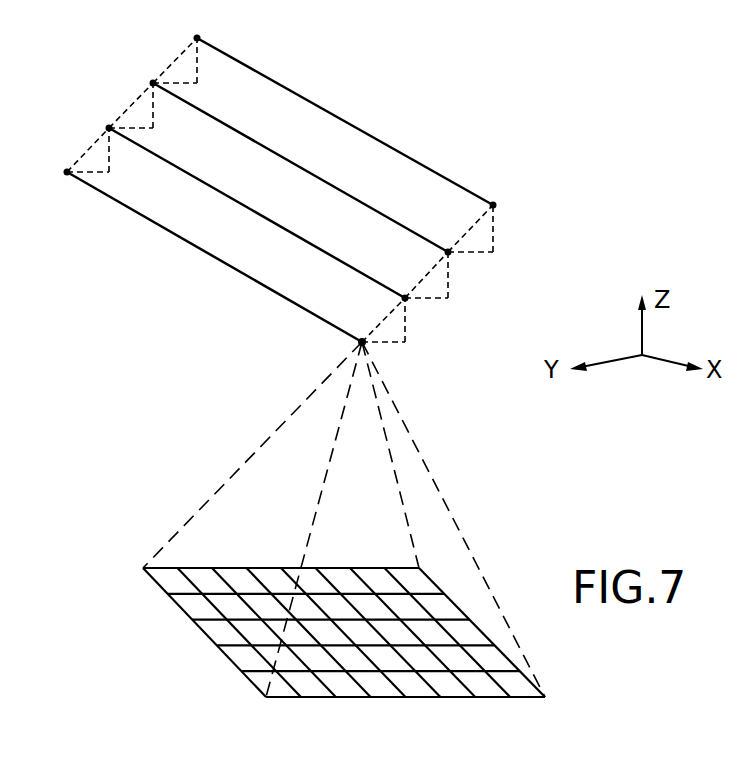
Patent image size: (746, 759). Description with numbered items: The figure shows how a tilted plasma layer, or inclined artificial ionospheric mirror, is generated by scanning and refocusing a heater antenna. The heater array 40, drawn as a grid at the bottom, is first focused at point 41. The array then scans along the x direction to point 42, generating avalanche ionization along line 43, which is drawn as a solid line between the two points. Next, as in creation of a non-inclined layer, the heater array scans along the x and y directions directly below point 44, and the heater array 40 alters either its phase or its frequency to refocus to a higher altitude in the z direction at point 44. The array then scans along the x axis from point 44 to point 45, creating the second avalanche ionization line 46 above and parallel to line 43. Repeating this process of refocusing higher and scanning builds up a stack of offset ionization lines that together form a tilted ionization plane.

The heater array 40 is at (507, 655).
The first focus point 41 is at (67, 172).
The scan end point 42 is at (364, 344).
The avalanche ionization line 43 is at (245, 273).
The refocused point at higher altitude 44 is at (109, 128).
The second scan end point 45 is at (405, 298).
The second avalanche ionization line 46 is at (272, 221).